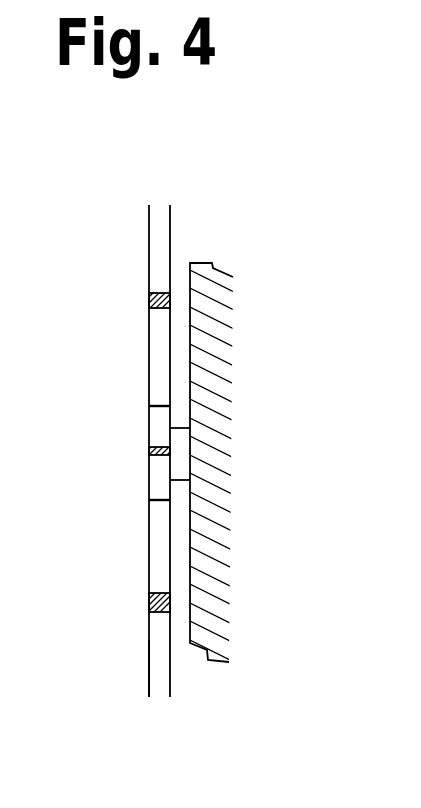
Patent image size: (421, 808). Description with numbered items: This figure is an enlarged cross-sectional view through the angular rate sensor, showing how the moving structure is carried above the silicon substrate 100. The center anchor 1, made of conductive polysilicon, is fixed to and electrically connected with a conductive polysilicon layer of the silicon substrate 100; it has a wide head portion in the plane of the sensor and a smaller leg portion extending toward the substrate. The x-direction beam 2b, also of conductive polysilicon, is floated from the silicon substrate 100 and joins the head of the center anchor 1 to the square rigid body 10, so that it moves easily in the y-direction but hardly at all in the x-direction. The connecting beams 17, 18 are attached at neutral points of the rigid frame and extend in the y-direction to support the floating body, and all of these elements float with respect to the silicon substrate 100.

The connecting beam 17 is at (149, 237).
The center anchor 1 is at (149, 423).
The x-direction beam 2b is at (149, 452).
The rigid body 10 is at (155, 597).
The connecting beam 18 is at (149, 667).
The silicon substrate 100 is at (217, 648).